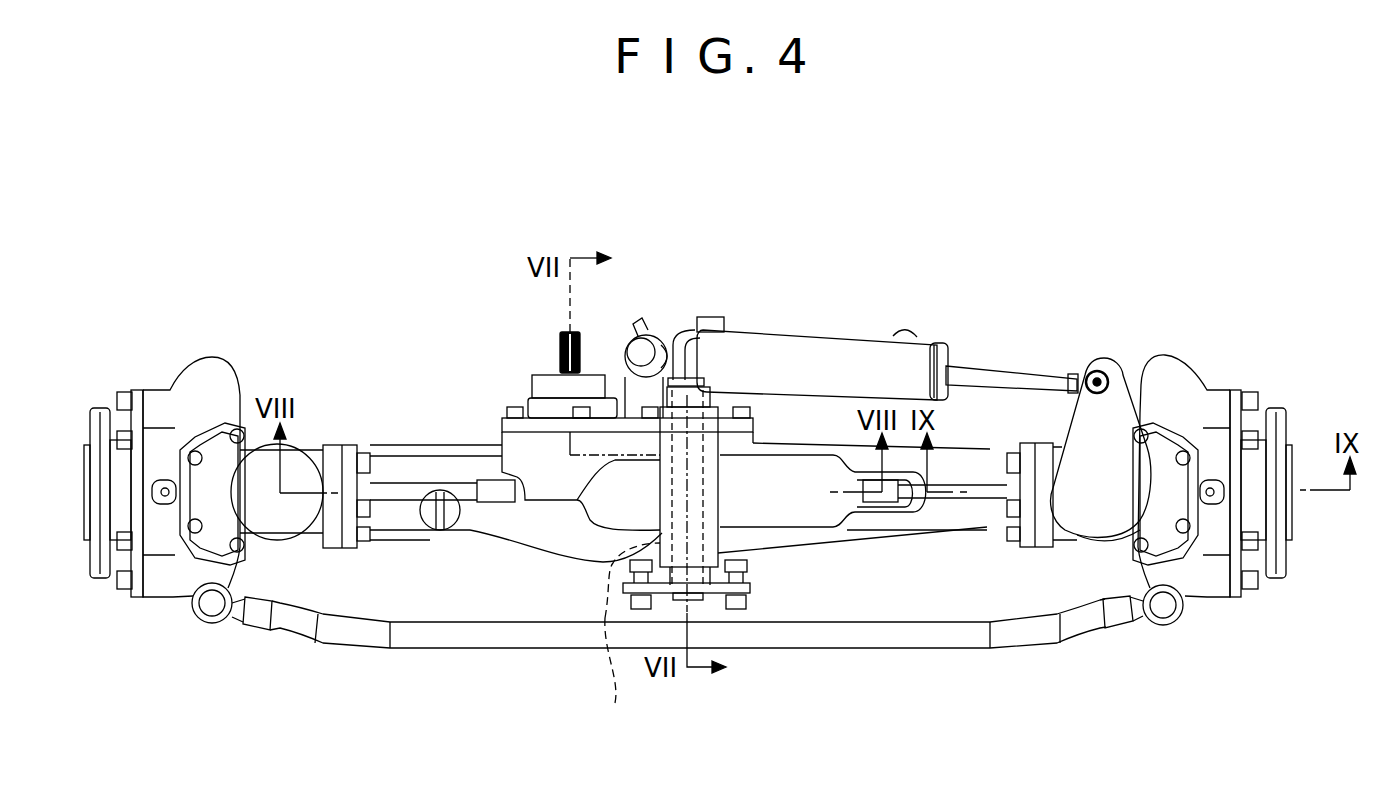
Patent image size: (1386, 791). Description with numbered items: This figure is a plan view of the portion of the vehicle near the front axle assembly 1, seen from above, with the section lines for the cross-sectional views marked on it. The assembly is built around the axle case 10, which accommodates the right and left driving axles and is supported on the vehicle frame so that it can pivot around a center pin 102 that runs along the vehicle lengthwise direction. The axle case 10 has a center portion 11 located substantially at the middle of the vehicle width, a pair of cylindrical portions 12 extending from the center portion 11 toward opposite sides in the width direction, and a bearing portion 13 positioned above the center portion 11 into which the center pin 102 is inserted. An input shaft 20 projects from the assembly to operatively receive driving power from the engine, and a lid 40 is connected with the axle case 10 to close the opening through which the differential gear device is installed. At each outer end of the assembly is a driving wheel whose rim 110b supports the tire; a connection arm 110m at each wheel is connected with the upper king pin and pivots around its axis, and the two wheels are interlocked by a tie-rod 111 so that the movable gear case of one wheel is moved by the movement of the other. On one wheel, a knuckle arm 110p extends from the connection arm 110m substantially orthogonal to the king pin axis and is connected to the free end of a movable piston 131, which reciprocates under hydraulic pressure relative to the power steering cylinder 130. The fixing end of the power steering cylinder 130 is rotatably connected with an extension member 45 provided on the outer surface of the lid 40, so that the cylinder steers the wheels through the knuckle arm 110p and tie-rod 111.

The axle assembly 1 is at (833, 570).
The axle case 10 is at (498, 557).
The center portion 11 is at (565, 537).
The cylindrical portions 12 is at (410, 532).
The bearing portion 13 is at (708, 497).
The input shaft 20 is at (557, 358).
The lid 40 is at (513, 425).
The extension member 45 is at (633, 390).
The center pin 102 is at (622, 642).
The rim 110b is at (98, 562).
The connection arm 110m is at (264, 503).
The knuckle arm 110p is at (1100, 373).
The tie-rod 111 is at (810, 640).
The power steering cylinder 130 is at (817, 353).
The movable piston 131 is at (997, 373).